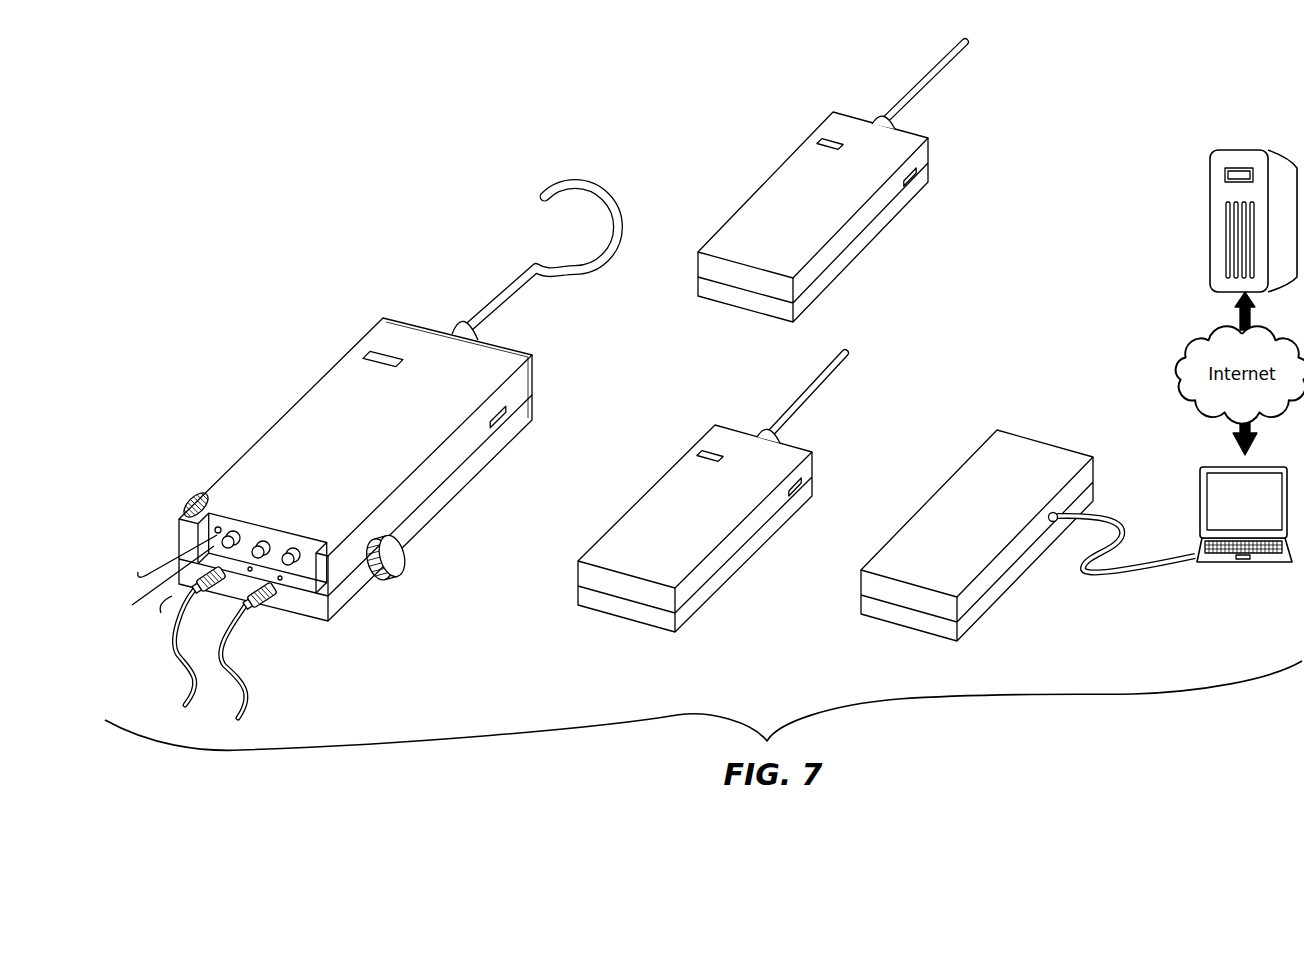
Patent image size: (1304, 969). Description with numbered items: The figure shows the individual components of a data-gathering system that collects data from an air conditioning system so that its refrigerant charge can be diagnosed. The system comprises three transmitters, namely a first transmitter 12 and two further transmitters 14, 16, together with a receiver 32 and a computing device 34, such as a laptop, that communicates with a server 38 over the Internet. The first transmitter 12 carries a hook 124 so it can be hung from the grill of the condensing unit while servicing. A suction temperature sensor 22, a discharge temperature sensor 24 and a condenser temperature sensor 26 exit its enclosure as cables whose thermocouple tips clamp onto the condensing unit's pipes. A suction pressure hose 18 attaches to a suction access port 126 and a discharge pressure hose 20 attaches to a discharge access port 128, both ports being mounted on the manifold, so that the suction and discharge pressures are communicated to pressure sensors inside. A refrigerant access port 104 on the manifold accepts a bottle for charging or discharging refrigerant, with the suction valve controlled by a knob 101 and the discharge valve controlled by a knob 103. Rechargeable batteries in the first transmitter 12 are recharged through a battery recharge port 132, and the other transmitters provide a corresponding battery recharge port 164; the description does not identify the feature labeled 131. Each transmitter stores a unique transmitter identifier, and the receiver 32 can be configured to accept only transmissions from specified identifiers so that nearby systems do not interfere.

The first transmitter 12 is at (358, 435).
The transmitter 14 is at (803, 207).
The transmitter 16 is at (683, 520).
The suction pressure hose 18 is at (169, 668).
The discharge pressure hose 20 is at (236, 668).
The suction temperature sensor 22 is at (148, 578).
The discharge temperature sensor 24 is at (143, 601).
The condenser temperature sensor 26 is at (167, 605).
The receiver 32 is at (963, 523).
The computing device 34 is at (1232, 510).
The server 38 is at (1210, 218).
The knob 101 is at (184, 500).
The knob 103 is at (394, 562).
The refrigerant access port 104 is at (265, 541).
The hook 124 is at (558, 190).
The suction access port 126 is at (237, 531).
The discharge access port 128 is at (297, 548).
The indicator window 131 is at (378, 352).
The battery recharge port 132 is at (505, 422).
The battery recharge port 164 is at (925, 189).